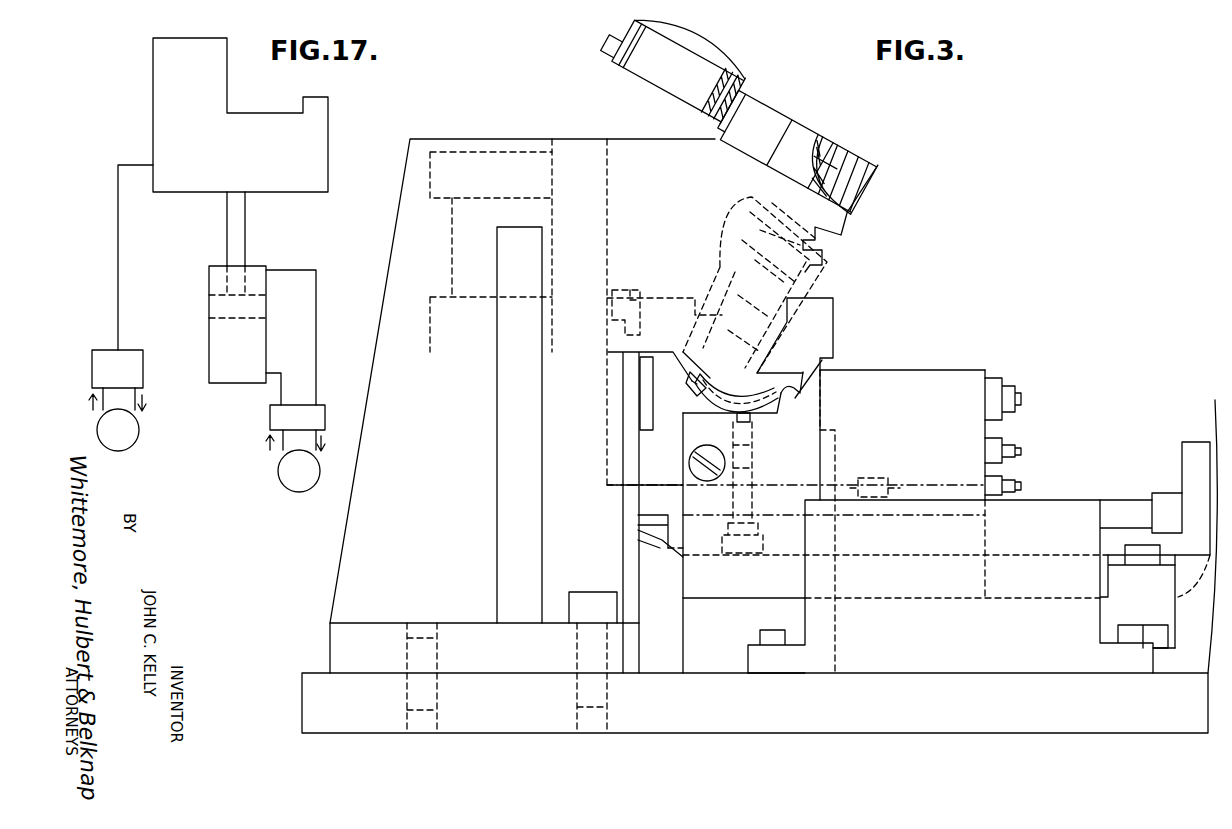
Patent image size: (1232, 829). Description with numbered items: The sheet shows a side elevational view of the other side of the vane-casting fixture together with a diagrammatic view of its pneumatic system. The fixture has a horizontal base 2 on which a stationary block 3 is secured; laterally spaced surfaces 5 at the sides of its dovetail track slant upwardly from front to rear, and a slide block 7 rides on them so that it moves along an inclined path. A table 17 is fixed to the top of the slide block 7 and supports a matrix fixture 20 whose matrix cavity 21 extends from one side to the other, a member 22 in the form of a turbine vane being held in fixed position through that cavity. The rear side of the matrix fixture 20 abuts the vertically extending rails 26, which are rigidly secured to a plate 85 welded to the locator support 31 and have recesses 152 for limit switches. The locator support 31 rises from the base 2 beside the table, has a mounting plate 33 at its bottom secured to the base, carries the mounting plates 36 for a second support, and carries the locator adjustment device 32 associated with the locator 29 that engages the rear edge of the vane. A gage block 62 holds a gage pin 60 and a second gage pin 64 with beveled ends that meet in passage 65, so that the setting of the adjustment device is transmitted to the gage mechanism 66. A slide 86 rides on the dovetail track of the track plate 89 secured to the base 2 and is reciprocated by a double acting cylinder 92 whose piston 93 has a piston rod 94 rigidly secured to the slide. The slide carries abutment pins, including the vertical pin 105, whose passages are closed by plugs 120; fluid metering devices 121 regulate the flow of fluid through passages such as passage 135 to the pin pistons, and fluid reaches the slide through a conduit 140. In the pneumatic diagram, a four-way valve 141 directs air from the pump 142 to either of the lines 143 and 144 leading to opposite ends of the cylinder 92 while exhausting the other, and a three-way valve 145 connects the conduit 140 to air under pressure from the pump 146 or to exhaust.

In FIG. 3, the horizontal base 2 is at (786, 733).
In FIG. 3, the stationary block 3 is at (652, 618).
In FIG. 3, the laterally spaced surfaces 5 is at (643, 538).
In FIG. 3, the slide block 7 is at (677, 554).
In FIG. 3, the table 17 is at (660, 503).
In FIG. 3, the matrix fixture 20 is at (829, 338).
In FIG. 3, the matrix cavity 21 is at (800, 396).
In FIG. 3, the member (turbine vane) 22 is at (775, 382).
In FIG. 3, the rails 26 is at (610, 426).
In FIG. 3, the locator 29 is at (686, 386).
In FIG. 3, the locator support 31 is at (630, 145).
In FIG. 3, the locator adjustment device 32 is at (847, 266).
In FIG. 3, the mounting plate 33 is at (328, 650).
In FIG. 3, the mounting plates 36 is at (491, 387).
In FIG. 3, the gage pin 60 is at (855, 205).
In FIG. 3, the gage block 62 is at (805, 133).
In FIG. 3, the gage pin 64 is at (818, 145).
In FIG. 3, the passage 65 is at (867, 163).
In FIG. 3, the gage mechanism 66 is at (720, 44).
In FIG. 3, the plate 85 is at (608, 281).
In FIG. 17, the slide 86 is at (153, 118).
In FIG. 3, the slide 86 is at (962, 368).
In FIG. 3, the track plate 89 is at (722, 668).
In FIG. 17, the double acting cylinder 92 is at (266, 352).
In FIG. 3, the double acting cylinder 92 is at (1213, 418).
In FIG. 17, the piston 93 is at (266, 307).
In FIG. 17, the piston rod 94 is at (242, 241).
In FIG. 3, the piston rod 94 is at (1132, 503).
In FIG. 3, the abutment pin 105 is at (757, 416).
In FIG. 3, the plugs 120 is at (708, 448).
In FIG. 3, the fluid metering device 121 is at (1034, 470).
In FIG. 3, the passage 135 is at (863, 483).
In FIG. 17, the conduit 140 is at (118, 290).
In FIG. 17, the 4-way valve 141 is at (327, 412).
In FIG. 3, the 4-way valve 141 is at (1198, 666).
In FIG. 17, the pump 142 is at (294, 493).
In FIG. 17, the line 143 is at (316, 316).
In FIG. 17, the line 144 is at (277, 381).
In FIG. 17, the 3-way valve 145 is at (143, 363).
In FIG. 3, the 3-way valve 145 is at (1052, 507).
In FIG. 17, the pump 146 is at (137, 445).
In FIG. 3, the recesses 152 is at (640, 287).